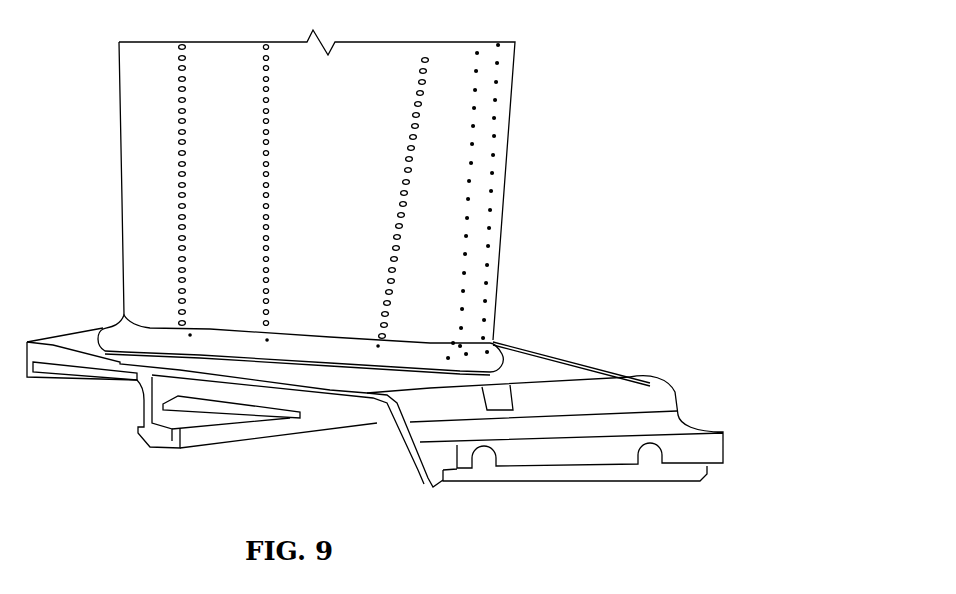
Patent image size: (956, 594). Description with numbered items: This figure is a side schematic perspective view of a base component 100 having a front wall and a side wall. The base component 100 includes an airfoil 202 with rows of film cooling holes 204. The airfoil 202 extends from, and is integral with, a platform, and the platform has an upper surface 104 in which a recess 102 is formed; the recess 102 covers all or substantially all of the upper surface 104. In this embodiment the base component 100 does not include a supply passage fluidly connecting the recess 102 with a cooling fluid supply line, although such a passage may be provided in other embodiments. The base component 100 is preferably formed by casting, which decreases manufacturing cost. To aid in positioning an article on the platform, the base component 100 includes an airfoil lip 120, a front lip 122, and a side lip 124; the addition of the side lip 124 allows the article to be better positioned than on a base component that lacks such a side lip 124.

The base component 100 is at (664, 104).
The recess 102 is at (268, 372).
The upper surface 104 is at (537, 363).
The airfoil lip 120 is at (407, 358).
The front lip 122 is at (613, 383).
The side lip 124 is at (575, 360).
The airfoil 202 is at (438, 207).
The film cooling holes 204 is at (183, 185).